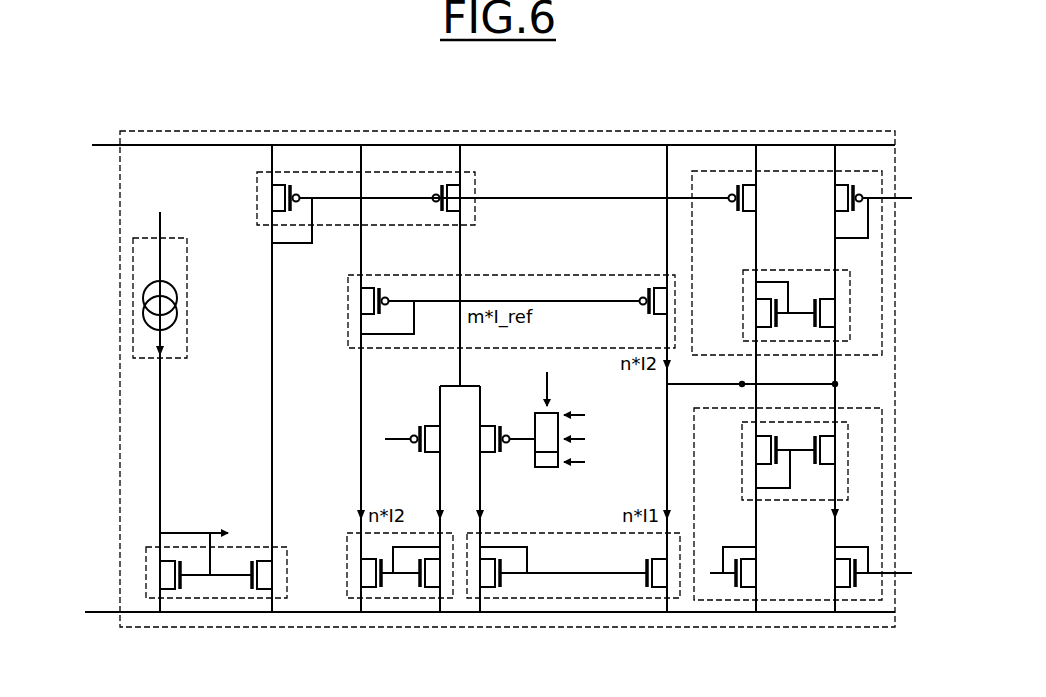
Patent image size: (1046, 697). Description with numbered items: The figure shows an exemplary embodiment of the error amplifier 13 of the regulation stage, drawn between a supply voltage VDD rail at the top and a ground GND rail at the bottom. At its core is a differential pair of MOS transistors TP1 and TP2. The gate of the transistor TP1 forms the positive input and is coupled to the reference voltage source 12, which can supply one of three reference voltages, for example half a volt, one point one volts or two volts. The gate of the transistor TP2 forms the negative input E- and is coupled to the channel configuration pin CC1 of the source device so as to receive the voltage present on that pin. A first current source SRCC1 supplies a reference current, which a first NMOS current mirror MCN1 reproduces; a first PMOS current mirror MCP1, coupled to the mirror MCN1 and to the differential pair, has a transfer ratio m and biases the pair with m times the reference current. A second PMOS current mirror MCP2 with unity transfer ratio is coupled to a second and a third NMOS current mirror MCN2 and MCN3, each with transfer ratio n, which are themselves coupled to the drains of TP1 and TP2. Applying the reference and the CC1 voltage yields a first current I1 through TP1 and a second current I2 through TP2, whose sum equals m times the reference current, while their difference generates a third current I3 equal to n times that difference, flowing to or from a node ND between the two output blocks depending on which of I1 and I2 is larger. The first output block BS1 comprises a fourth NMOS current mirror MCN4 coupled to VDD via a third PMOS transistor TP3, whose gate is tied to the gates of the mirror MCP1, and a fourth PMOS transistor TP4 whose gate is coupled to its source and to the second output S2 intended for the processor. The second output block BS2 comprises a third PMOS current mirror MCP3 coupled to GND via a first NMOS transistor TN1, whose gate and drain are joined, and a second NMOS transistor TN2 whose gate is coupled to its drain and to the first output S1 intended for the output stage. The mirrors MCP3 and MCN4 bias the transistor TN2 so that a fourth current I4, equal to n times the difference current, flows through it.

The error amplifier 13 is at (509, 130).
The reference voltage source 12 is at (548, 419).
The supply voltage VDD is at (482, 132).
The ground GND is at (481, 601).
The first current source SRCC1 is at (193, 283).
The first current mirror of PMOS type MCP1 is at (258, 196).
The second current mirror of PMOS type MCP2 is at (555, 273).
The third current mirror of PMOS type MCP3 is at (800, 502).
The first current mirror of NMOS type MCN1 is at (288, 573).
The second current mirror of NMOS type MCN2 is at (572, 600).
The third current mirror of NMOS type MCN3 is at (400, 600).
The fourth current mirror of NMOS type MCN4 is at (805, 268).
The first transistor of the differential pair TP1 is at (498, 422).
The second transistor of the differential pair TP2 is at (417, 422).
The third PMOS transistor TP3 is at (739, 182).
The fourth PMOS transistor TP4 is at (854, 182).
The first NMOS transistor TN1 is at (737, 592).
The second NMOS transistor TN2 is at (853, 592).
The first output block BS1 is at (802, 225).
The second output block BS2 is at (803, 540).
The channel configuration pin CC1 is at (389, 426).
The negative input E- is at (401, 446).
The first output S1 is at (899, 569).
The second output S2 is at (899, 194).
The node ND is at (752, 374).
The first current I1 is at (496, 515).
The second current I2 is at (426, 515).
The third current I3 is at (738, 374).
The fourth current I4 is at (823, 516).